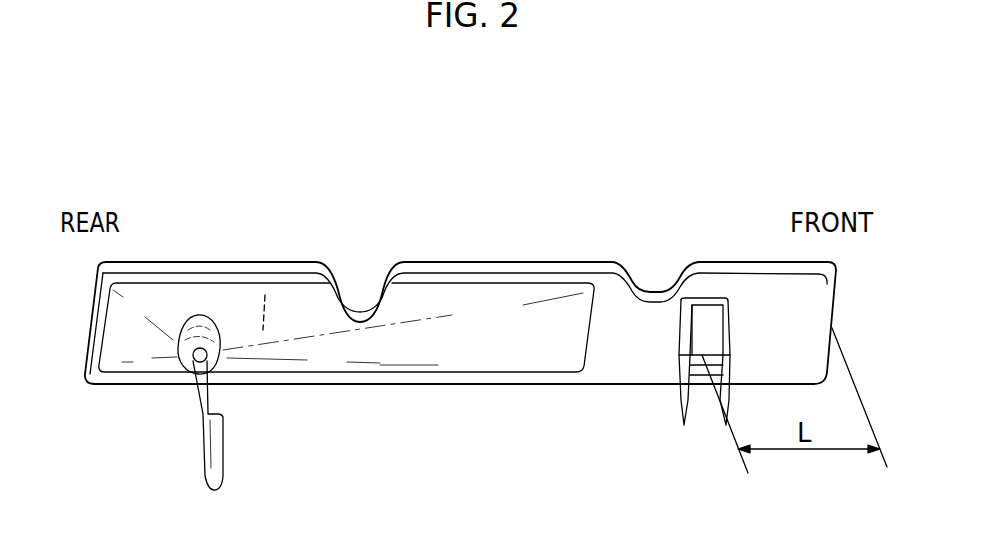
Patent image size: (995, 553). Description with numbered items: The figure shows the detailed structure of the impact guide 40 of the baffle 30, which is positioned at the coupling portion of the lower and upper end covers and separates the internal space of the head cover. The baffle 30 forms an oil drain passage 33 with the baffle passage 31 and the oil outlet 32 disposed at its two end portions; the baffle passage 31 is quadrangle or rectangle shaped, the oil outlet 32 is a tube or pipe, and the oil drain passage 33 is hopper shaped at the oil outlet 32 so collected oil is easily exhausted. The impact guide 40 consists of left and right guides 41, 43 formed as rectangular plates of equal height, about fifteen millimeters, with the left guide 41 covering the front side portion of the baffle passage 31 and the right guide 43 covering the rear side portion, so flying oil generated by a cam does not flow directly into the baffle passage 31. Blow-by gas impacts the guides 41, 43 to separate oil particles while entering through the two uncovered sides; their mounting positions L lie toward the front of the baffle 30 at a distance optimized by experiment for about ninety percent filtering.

The baffle 30 is at (441, 183).
The baffle passage 31 is at (706, 323).
The oil outlet 32 is at (203, 400).
The oil drain passage 33 is at (266, 283).
The impact guide 40 is at (666, 346).
The left guide 41 is at (676, 405).
The right guide 43 is at (718, 410).